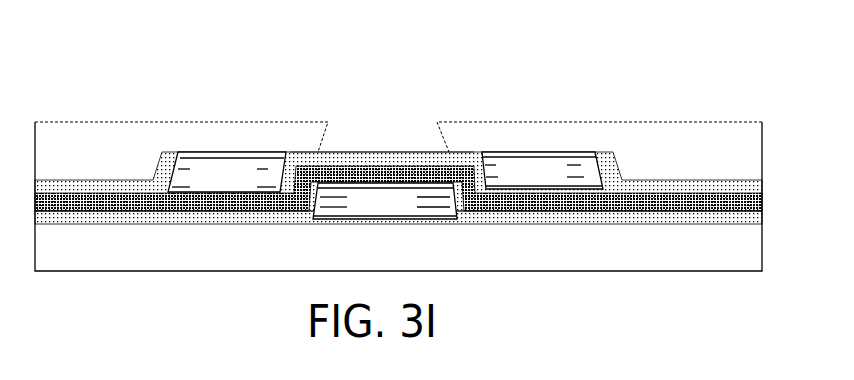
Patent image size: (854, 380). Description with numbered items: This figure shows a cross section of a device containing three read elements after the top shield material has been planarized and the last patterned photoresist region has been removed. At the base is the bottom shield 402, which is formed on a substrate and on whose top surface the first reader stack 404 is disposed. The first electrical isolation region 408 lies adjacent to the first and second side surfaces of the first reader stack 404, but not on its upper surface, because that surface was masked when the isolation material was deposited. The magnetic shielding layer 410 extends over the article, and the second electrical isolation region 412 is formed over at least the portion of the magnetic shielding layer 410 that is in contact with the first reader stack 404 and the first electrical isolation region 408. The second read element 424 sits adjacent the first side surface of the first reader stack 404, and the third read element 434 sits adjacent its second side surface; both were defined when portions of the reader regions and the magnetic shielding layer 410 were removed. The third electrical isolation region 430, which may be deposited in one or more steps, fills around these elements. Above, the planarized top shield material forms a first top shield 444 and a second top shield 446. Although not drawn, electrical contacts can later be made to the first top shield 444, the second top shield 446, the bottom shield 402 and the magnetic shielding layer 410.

The bottom shield 402 is at (202, 256).
The first reader stack 404 is at (362, 214).
The first electrical isolation region 408 is at (43, 218).
The magnetic shielding layer 410 is at (77, 197).
The second electrical isolation region 412 is at (463, 157).
The second read element 424 is at (202, 189).
The third electrical isolation region 430 is at (118, 187).
The third read element 434 is at (510, 185).
The first top shield 444 is at (74, 160).
The second top shield 446 is at (662, 158).